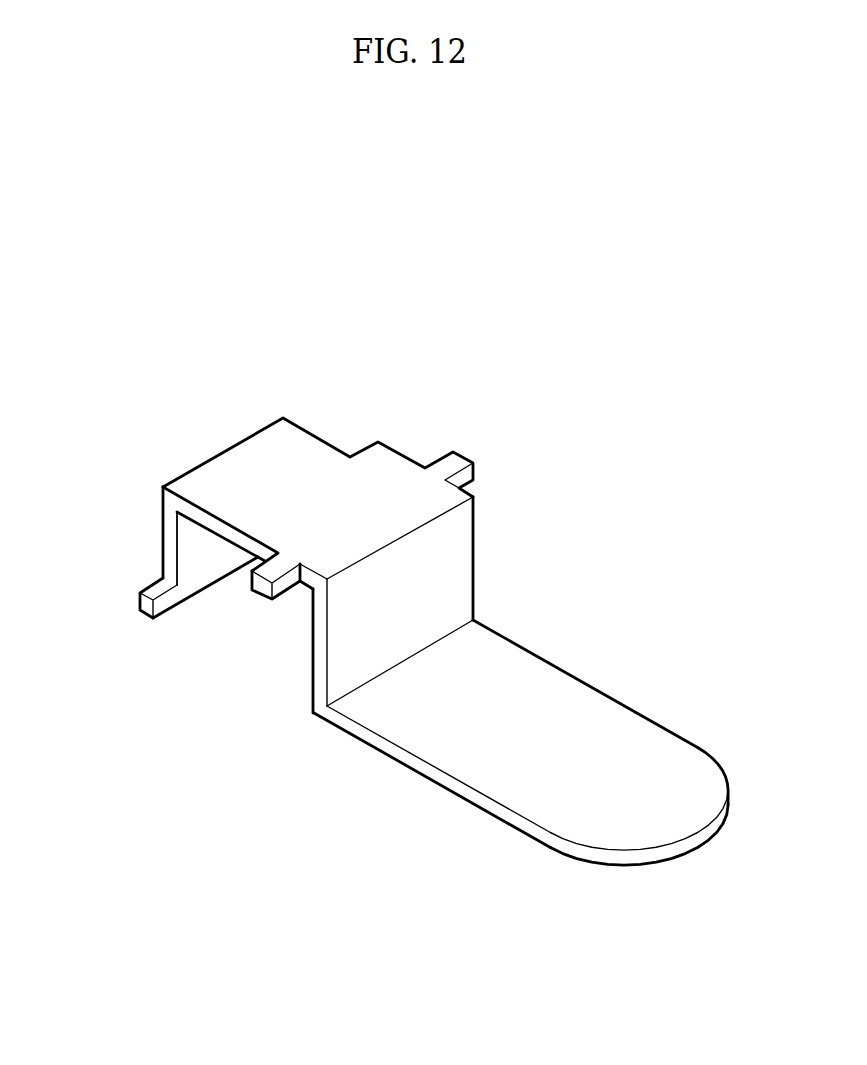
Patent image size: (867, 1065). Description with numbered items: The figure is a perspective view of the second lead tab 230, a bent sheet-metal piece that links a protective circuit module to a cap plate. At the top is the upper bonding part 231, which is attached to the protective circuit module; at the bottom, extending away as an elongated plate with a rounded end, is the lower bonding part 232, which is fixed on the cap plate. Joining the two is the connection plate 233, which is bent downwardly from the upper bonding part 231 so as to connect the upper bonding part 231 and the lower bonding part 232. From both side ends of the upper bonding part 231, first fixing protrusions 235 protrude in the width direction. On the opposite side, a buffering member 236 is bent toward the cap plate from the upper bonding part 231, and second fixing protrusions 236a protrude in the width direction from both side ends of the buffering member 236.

The second lead tab 230 is at (361, 328).
The upper bonding part 231 is at (250, 460).
The lower bonding part 232 is at (515, 788).
The connection plate 233 is at (457, 566).
The first fixing protrusions 235 is at (459, 463).
The buffering member 236 is at (190, 532).
The second fixing protrusions 236a is at (140, 600).